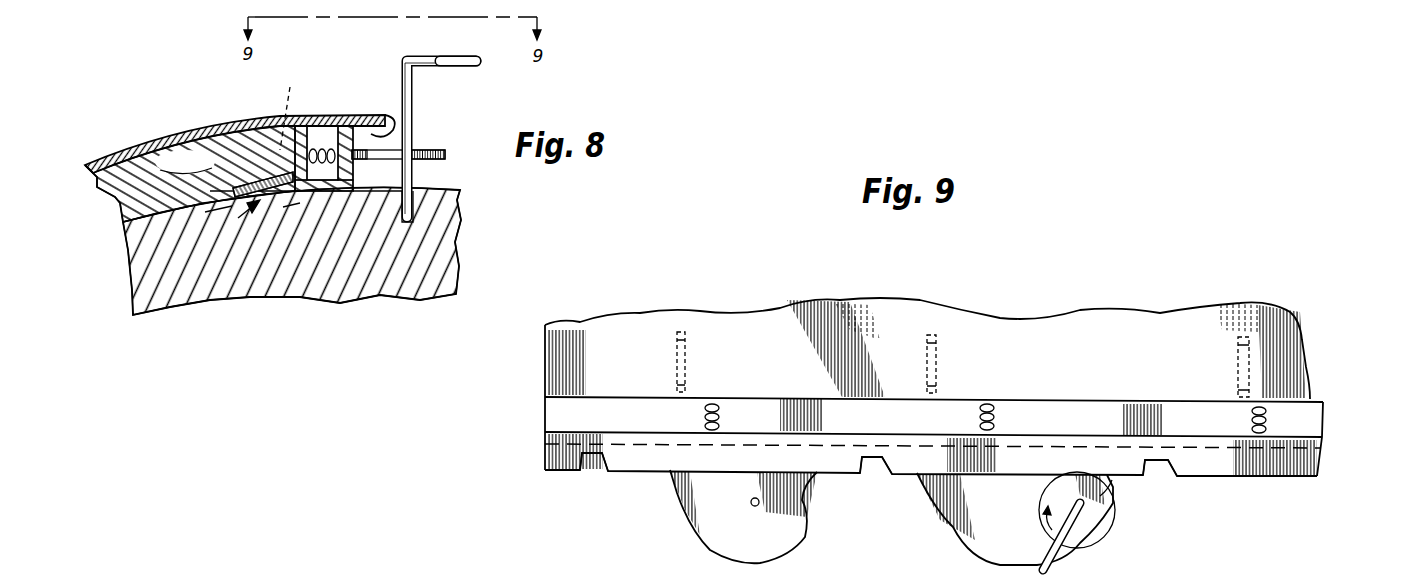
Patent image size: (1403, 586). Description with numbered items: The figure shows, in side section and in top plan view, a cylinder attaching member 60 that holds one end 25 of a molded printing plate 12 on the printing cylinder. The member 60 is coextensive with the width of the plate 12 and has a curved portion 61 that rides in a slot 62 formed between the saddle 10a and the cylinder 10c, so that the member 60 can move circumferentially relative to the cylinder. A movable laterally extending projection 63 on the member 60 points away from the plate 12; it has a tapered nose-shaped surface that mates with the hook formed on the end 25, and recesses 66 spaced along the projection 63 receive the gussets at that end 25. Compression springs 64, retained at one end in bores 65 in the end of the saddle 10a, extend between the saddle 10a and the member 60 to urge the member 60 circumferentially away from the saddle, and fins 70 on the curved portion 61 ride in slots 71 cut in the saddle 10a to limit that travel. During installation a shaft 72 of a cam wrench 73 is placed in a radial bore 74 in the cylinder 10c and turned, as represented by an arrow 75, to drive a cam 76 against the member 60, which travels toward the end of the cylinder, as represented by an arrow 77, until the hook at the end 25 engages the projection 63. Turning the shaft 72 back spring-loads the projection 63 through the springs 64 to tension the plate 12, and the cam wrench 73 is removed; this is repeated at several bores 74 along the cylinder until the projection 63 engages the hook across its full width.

In FIG. 8, the saddle 10a is at (122, 198).
In FIG. 9, the saddle 10a is at (1025, 325).
In FIG. 8, the cylinder 10c is at (150, 280).
In FIG. 9, the cylinder 10c is at (800, 548).
In FIG. 8, the printing plate 12 is at (260, 125).
In FIG. 8, the end of plate 25 is at (392, 100).
In FIG. 9, the cylinder attaching member 60 is at (1324, 465).
In FIG. 8, the curved portion 61 is at (245, 208).
In FIG. 8, the slot 62 is at (218, 215).
In FIG. 8, the movable laterally extending projection 63 is at (380, 130).
In FIG. 9, the movable laterally extending projection 63 is at (1245, 478).
In FIG. 8, the compression springs 64 is at (318, 124).
In FIG. 9, the compression springs 64 is at (721, 415).
In FIG. 8, the bores 65 is at (282, 108).
In FIG. 9, the recesses 66 is at (600, 471).
In FIG. 8, the fins 70 is at (233, 135).
In FIG. 9, the fins 70 is at (688, 372).
In FIG. 8, the slots 71 is at (160, 142).
In FIG. 9, the slots 71 is at (688, 391).
In FIG. 8, the shaft 72 is at (413, 120).
In FIG. 8, the cam wrench 73 is at (462, 47).
In FIG. 9, the cam wrench 73 is at (1025, 555).
In FIG. 8, the radial bore 74 is at (412, 208).
In FIG. 9, the radial bore 74 is at (757, 507).
In FIG. 9, the arrow 75 is at (1093, 543).
In FIG. 8, the cam 76 is at (447, 153).
In FIG. 9, the cam 76 is at (1112, 480).
In FIG. 8, the arrow 77 is at (283, 207).